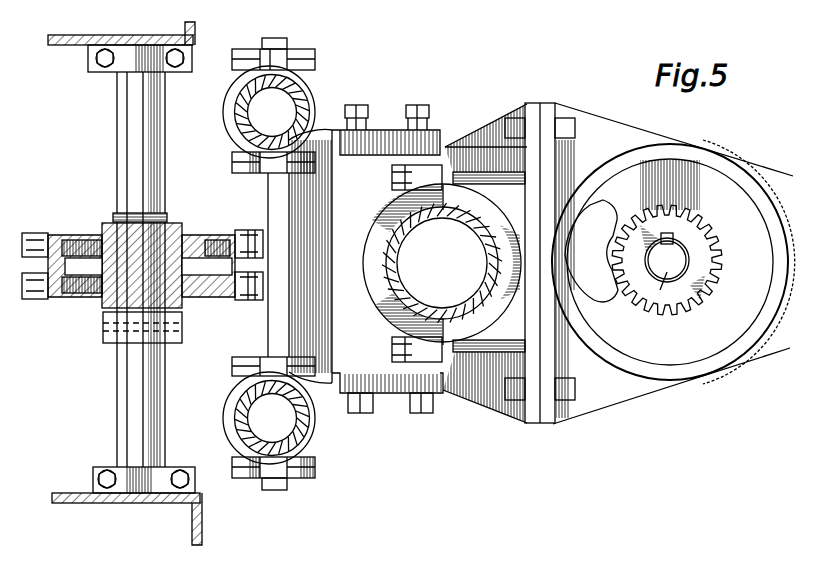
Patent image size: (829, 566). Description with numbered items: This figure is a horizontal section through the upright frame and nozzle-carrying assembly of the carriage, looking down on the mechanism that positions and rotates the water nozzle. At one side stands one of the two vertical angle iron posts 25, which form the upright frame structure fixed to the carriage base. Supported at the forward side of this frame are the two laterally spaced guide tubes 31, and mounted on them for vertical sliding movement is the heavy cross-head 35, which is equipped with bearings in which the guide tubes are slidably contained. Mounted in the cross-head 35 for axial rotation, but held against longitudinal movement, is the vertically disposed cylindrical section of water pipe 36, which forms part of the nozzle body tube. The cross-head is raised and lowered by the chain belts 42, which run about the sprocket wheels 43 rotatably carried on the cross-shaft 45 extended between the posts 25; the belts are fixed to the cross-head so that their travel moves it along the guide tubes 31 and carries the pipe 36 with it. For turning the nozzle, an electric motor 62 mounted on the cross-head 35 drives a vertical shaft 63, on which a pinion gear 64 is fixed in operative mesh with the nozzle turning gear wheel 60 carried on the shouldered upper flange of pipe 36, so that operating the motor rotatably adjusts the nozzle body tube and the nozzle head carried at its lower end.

The vertical angle iron post 25 is at (72, 46).
The guide tube 31 is at (308, 103).
The cross-head 35 is at (490, 183).
The cylindrical section of water pipe 36 is at (400, 300).
The chain belt 42 is at (238, 233).
The sprocket wheel 43 is at (48, 234).
The cross-shaft 45 is at (143, 397).
The nozzle turning gear wheel 60 is at (612, 318).
The electric motor 62 is at (720, 181).
The vertical shaft 63 is at (676, 288).
The pinion gear 64 is at (708, 292).